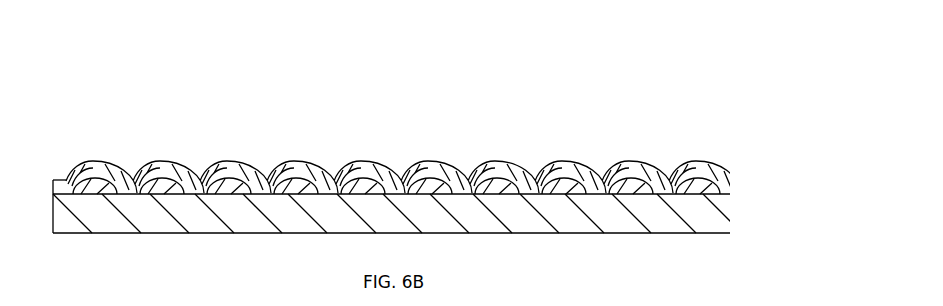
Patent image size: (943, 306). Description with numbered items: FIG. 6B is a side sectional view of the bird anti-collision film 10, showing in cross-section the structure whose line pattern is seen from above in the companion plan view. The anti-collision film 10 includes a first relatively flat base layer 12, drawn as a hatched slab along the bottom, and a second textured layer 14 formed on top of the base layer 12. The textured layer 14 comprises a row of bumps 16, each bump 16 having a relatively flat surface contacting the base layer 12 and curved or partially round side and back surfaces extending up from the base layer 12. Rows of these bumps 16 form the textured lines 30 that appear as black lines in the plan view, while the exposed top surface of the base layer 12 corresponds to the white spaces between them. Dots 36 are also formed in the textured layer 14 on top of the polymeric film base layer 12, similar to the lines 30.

The anti-collision film 10 is at (122, 105).
The base layer 12 is at (607, 215).
The textured layer 14 is at (748, 181).
The bumps 16 is at (160, 240).
The textured lines 30 is at (632, 162).
The dots 36 is at (53, 185).